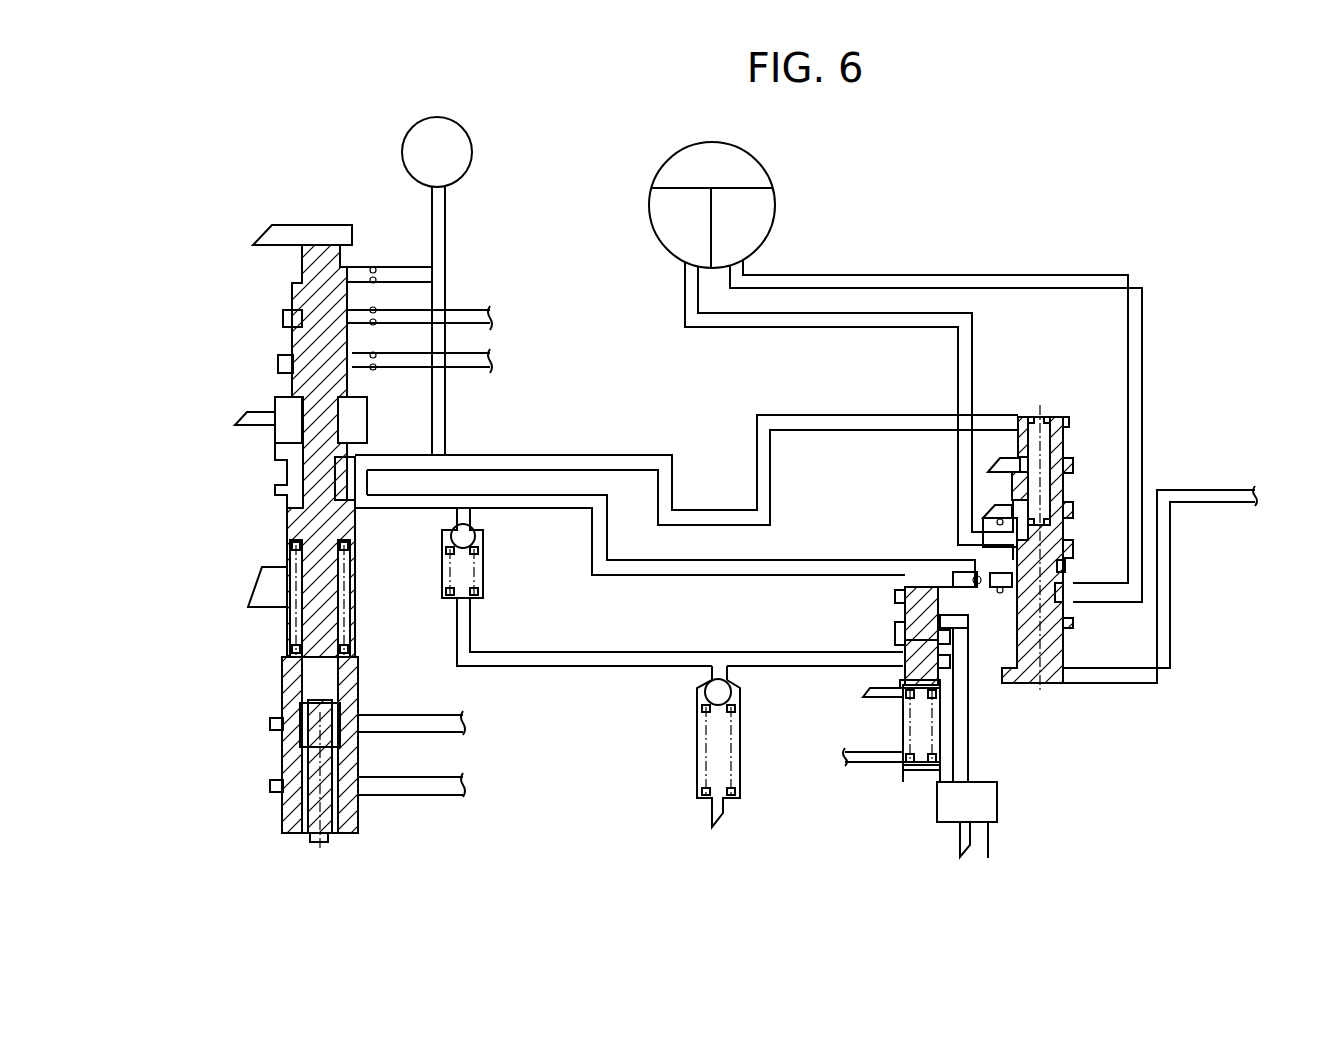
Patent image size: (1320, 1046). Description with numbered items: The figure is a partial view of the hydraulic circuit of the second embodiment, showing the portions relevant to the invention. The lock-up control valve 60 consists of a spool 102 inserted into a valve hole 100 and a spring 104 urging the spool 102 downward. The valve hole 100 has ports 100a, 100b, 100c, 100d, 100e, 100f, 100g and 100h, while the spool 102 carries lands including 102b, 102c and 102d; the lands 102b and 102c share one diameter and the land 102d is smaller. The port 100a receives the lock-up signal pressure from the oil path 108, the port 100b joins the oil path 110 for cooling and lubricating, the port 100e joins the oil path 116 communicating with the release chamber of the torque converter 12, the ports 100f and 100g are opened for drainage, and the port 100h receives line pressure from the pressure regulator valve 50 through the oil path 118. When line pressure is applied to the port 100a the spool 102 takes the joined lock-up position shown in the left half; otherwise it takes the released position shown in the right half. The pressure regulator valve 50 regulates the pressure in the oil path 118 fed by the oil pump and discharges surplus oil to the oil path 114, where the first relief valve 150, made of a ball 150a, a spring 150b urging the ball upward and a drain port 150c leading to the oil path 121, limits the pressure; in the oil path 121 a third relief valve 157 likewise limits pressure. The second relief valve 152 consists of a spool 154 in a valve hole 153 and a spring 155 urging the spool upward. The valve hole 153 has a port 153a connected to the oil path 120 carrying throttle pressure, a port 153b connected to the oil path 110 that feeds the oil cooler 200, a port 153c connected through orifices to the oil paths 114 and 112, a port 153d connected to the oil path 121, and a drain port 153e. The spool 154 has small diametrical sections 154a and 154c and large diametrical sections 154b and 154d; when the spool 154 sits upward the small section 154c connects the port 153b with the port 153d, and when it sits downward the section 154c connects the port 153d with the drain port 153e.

The torque converter 12 is at (755, 150).
The pressure regulator valve 50 is at (256, 286).
The lock-up control valve 60 is at (1056, 541).
The valve hole 100 is at (1030, 675).
The port 100a is at (1065, 683).
The port 100b is at (1070, 638).
The port 100c is at (1102, 598).
The port 100d is at (1075, 566).
The port 100e is at (1080, 553).
The port 100f is at (1075, 512).
The port 100g is at (1074, 463).
The port 100h is at (1063, 415).
The spool 102 is at (1042, 670).
The land 102b is at (1022, 555).
The land 102c is at (1012, 498).
The land 102d is at (1012, 462).
The spring 104 is at (1034, 415).
The oil path 108 is at (1172, 672).
The oil path 110 is at (968, 780).
The oil path 112 is at (1143, 298).
The oil path 114 is at (808, 558).
The oil path 116 is at (958, 348).
The oil path 118 is at (447, 236).
The oil path 120 is at (850, 760).
The oil path 121 is at (568, 668).
The first relief valve 150 is at (465, 579).
The ball 150a is at (470, 538).
The spring 150b is at (446, 573).
The drain port 150c is at (460, 608).
The second relief valve 152 is at (888, 715).
The valve hole 153 is at (819, 724).
The port 153a is at (942, 788).
The port 153b is at (896, 628).
The port 153c is at (896, 596).
The port 153d is at (897, 638).
The port 153e is at (880, 700).
The spool 154 is at (885, 655).
The small diametrical section 154a is at (965, 585).
The large diametrical section 154b is at (950, 640).
The small diametrical section 154c is at (950, 660).
The large diametrical section 154d is at (880, 678).
The spring 155 is at (906, 768).
The third relief valve 157 is at (693, 745).
The oil cooler 200 is at (988, 830).